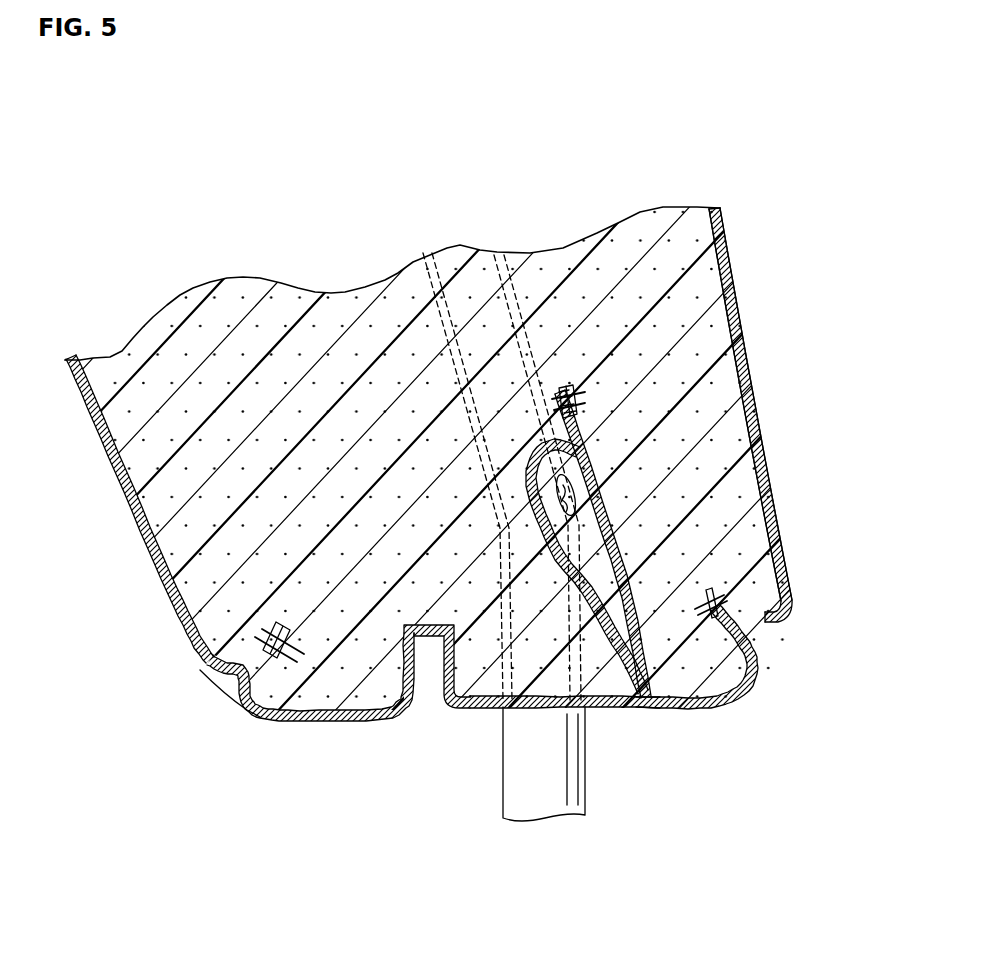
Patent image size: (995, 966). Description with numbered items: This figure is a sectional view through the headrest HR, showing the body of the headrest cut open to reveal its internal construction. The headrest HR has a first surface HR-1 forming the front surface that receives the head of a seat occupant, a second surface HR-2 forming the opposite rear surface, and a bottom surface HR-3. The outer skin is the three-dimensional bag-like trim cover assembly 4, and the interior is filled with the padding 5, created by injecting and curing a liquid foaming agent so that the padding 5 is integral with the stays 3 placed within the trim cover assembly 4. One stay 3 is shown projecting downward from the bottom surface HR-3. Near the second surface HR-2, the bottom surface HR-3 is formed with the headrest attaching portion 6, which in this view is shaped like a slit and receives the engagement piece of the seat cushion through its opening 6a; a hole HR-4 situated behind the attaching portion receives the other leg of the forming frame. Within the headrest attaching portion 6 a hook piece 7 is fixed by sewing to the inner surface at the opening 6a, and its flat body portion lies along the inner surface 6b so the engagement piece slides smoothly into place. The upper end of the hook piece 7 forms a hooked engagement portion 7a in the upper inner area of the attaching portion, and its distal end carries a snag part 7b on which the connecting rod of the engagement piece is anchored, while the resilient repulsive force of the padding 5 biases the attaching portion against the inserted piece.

The stay 3 is at (528, 795).
The trim cover assembly 4 is at (747, 343).
The padding 5 is at (636, 255).
The headrest attaching portion 6 is at (625, 555).
The opening of the headrest attaching portion 6a is at (645, 700).
The inner surface of the headrest attaching portion 6b is at (747, 673).
The hook piece 7 is at (613, 530).
The hooked engagement portion 7a is at (548, 432).
The snag part 7b is at (600, 503).
The headrest HR is at (723, 253).
The first surface HR-1 is at (110, 463).
The second surface HR-2 is at (733, 292).
The bottom surface HR-3 is at (333, 722).
The hole HR-4 is at (427, 685).